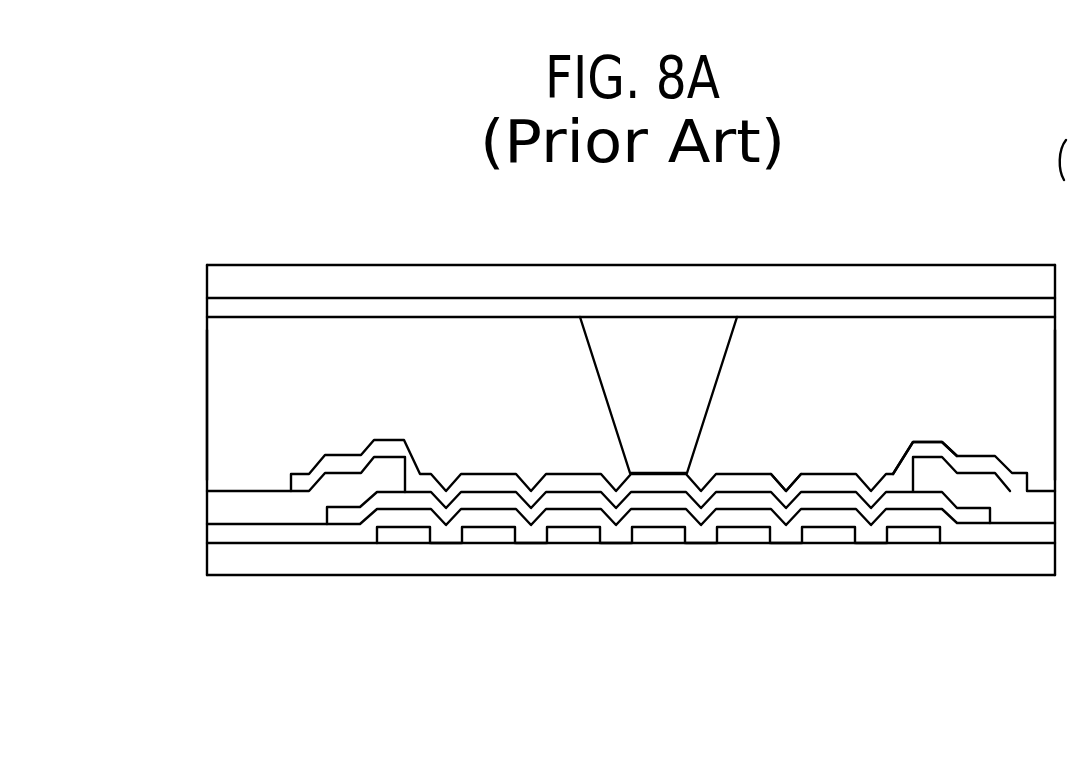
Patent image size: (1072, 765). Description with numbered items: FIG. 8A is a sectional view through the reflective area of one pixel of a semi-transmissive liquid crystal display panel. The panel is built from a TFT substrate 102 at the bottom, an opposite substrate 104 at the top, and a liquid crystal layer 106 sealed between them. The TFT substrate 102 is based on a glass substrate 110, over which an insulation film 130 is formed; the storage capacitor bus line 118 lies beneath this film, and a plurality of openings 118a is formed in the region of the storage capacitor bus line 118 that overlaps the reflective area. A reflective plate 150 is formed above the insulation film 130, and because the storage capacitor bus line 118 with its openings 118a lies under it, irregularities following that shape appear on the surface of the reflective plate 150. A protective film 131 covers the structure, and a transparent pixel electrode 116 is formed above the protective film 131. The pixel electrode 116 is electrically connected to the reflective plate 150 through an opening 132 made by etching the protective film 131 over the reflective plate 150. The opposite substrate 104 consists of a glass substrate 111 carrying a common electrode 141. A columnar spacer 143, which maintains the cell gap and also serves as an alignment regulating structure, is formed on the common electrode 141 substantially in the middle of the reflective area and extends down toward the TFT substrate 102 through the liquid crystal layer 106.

The TFT substrate 102 is at (262, 602).
The opposite substrate 104 is at (247, 248).
The liquid crystal layer 106 is at (225, 410).
The glass substrate 110 is at (215, 564).
The glass substrate 111 is at (215, 279).
The transparent pixel electrode 116 is at (927, 448).
The storage capacitor bus line 118 is at (403, 535).
The openings 118a is at (447, 560).
The insulation film 130 is at (215, 534).
The protective film 131 is at (215, 507).
The opening 132 is at (552, 432).
The common electrode 141 is at (215, 308).
The columnar spacer 143 is at (658, 343).
The reflective plate 150 is at (770, 502).